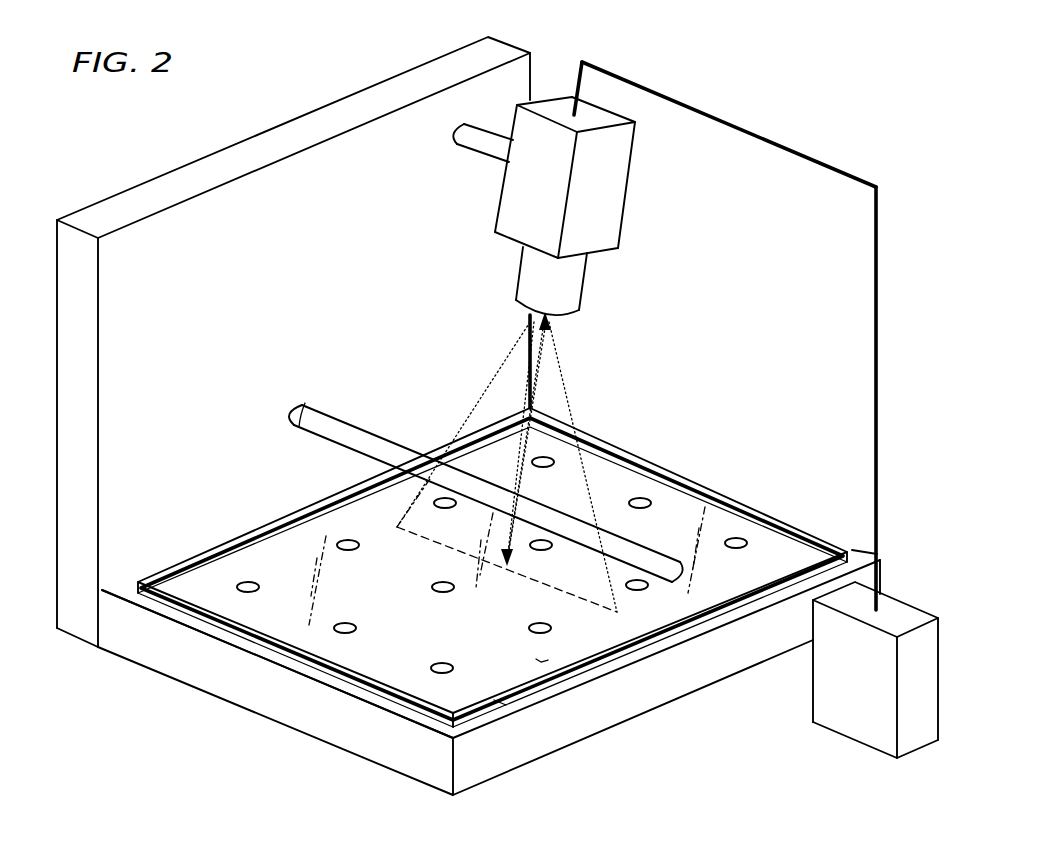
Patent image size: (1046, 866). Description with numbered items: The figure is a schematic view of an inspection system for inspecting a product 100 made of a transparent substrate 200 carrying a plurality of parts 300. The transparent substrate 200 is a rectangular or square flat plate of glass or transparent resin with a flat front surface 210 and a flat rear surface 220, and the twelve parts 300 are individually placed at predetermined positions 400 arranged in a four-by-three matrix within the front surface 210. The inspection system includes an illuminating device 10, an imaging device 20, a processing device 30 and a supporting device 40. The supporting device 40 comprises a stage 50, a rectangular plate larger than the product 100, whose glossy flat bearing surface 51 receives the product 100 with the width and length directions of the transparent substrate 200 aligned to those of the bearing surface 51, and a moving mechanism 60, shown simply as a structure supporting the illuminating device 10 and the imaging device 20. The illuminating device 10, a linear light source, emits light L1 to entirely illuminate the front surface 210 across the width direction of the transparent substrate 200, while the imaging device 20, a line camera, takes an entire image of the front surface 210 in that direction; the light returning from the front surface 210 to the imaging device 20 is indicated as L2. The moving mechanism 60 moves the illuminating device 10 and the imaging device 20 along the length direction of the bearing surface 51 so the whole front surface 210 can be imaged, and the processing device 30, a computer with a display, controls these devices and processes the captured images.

The illuminating device 10 is at (347, 428).
The imaging device 20 is at (618, 172).
The processing device 30 is at (902, 610).
The supporting device 40 is at (702, 675).
The stage 50 is at (362, 745).
The bearing surface 51 is at (262, 650).
The moving mechanism 60 is at (70, 385).
The product 100 is at (222, 550).
The transparent substrate 200 is at (297, 515).
The front surface 210 is at (543, 662).
The rear surface 220 is at (500, 703).
The parts 300 is at (252, 582).
The predetermined positions 400 is at (253, 593).
The light L1 is at (498, 518).
The reflected light L2 is at (521, 482).